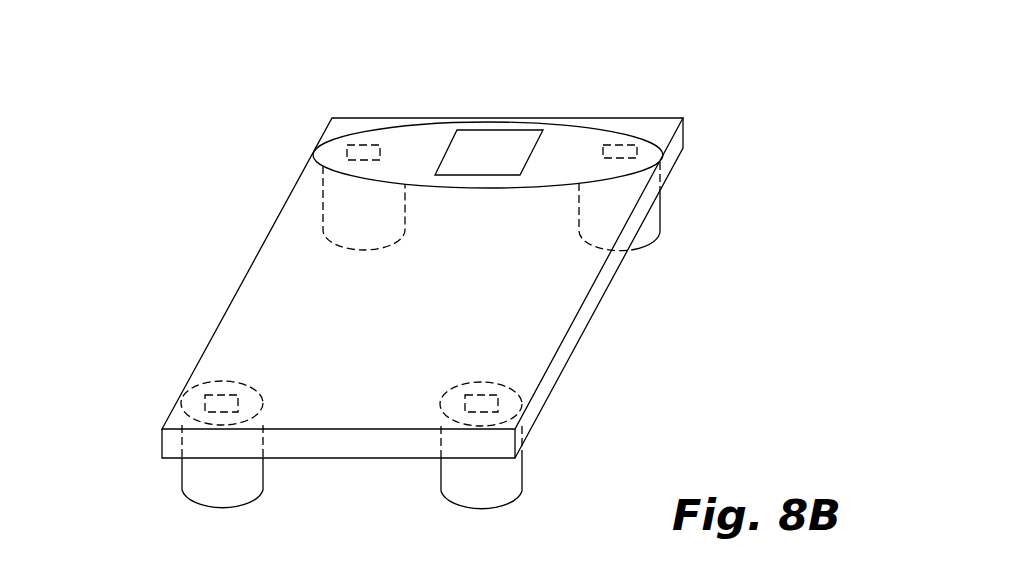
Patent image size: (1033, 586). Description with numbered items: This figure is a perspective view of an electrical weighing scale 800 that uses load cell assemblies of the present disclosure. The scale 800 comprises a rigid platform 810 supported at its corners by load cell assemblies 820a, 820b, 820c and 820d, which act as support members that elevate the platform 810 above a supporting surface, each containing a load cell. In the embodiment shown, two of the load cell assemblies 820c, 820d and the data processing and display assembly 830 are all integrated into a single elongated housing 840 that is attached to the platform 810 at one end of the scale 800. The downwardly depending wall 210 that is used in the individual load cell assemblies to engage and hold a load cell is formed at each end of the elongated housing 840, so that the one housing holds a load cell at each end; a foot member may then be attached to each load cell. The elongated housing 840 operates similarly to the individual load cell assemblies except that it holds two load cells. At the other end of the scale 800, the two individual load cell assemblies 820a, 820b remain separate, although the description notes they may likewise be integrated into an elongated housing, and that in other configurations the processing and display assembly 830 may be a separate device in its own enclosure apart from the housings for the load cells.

The scale 800 is at (712, 362).
The rigid platform 810 is at (238, 288).
The load cell assembly 820a is at (182, 470).
The load cell assembly 820b is at (522, 468).
The load cell assembly 820c is at (660, 212).
The load cell assembly 820d is at (317, 177).
The data processing and display assembly 830 is at (500, 130).
The elongated housing 840 is at (388, 118).
The downwardly depending wall 210 is at (363, 142).